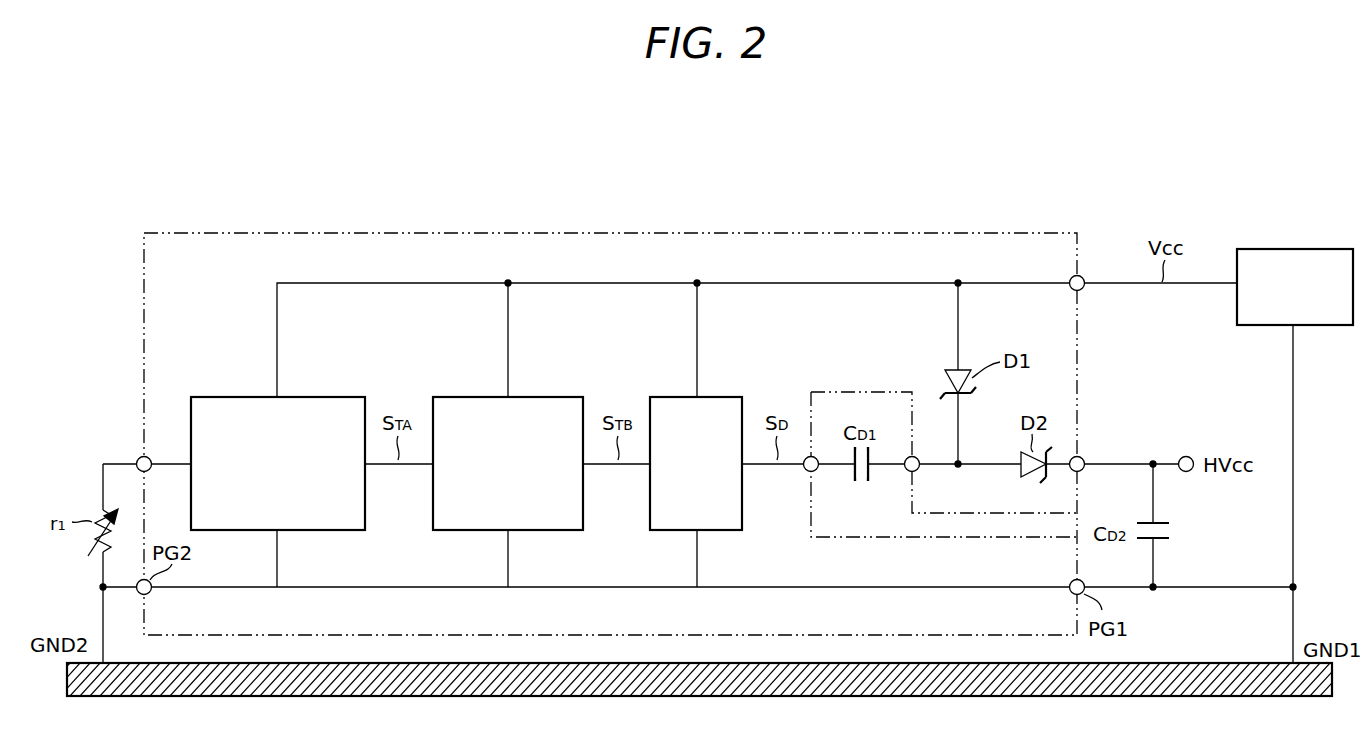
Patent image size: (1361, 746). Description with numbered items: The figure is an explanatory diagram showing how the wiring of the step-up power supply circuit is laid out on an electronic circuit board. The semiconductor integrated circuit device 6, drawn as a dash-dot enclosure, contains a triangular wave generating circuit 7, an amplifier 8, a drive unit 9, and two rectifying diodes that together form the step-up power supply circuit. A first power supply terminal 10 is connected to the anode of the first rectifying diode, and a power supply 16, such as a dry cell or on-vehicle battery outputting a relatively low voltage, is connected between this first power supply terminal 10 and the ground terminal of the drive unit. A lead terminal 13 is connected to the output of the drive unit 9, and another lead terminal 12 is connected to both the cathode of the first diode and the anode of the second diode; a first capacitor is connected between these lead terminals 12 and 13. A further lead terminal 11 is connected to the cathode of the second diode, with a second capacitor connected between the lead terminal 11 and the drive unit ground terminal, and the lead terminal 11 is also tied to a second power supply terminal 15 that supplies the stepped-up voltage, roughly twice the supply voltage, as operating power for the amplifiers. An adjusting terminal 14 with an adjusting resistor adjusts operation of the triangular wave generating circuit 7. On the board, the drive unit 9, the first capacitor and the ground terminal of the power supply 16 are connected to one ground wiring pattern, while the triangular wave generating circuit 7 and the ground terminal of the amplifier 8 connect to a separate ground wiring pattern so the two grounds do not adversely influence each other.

The semiconductor integrated circuit device 6 is at (612, 233).
The triangular wave generating circuit 7 is at (322, 397).
The amplifier 8 is at (546, 397).
The drive unit 9 is at (720, 397).
The first power supply terminal 10 is at (1084, 290).
The lead terminal 11 is at (1084, 458).
The lead terminal 12 is at (906, 472).
The lead terminal 13 is at (805, 472).
The adjusting terminal 14 is at (138, 458).
The second power supply terminal 15 is at (1186, 456).
The power supply 16 is at (1298, 249).